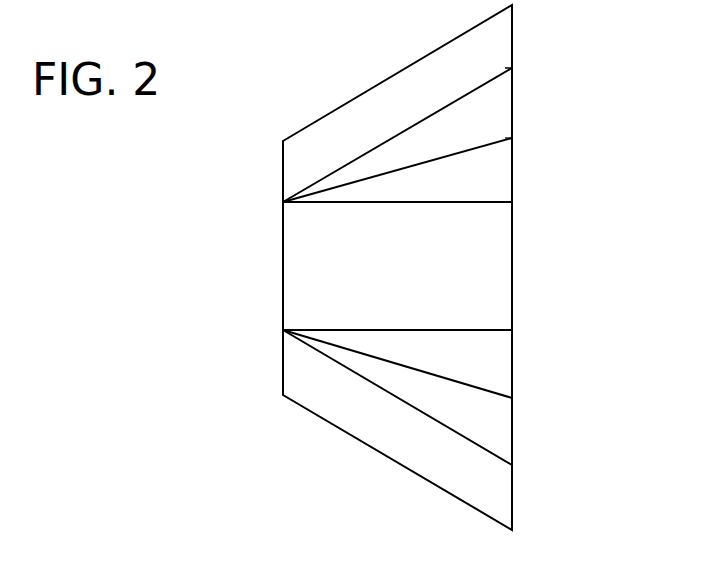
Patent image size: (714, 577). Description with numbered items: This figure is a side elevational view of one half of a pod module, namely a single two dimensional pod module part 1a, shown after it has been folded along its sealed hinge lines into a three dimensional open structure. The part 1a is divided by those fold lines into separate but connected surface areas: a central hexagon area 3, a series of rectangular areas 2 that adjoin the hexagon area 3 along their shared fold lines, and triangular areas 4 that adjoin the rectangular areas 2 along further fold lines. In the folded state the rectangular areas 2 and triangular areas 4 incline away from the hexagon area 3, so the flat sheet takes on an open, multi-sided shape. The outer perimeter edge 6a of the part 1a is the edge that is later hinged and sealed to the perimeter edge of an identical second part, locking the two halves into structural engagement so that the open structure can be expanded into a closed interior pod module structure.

The pod module part 1a is at (339, 267).
The rectangular area 2 is at (397, 264).
The triangular area 4 is at (397, 267).
The hexagon area 3 is at (256, 247).
The perimeter edge 6a is at (513, 362).